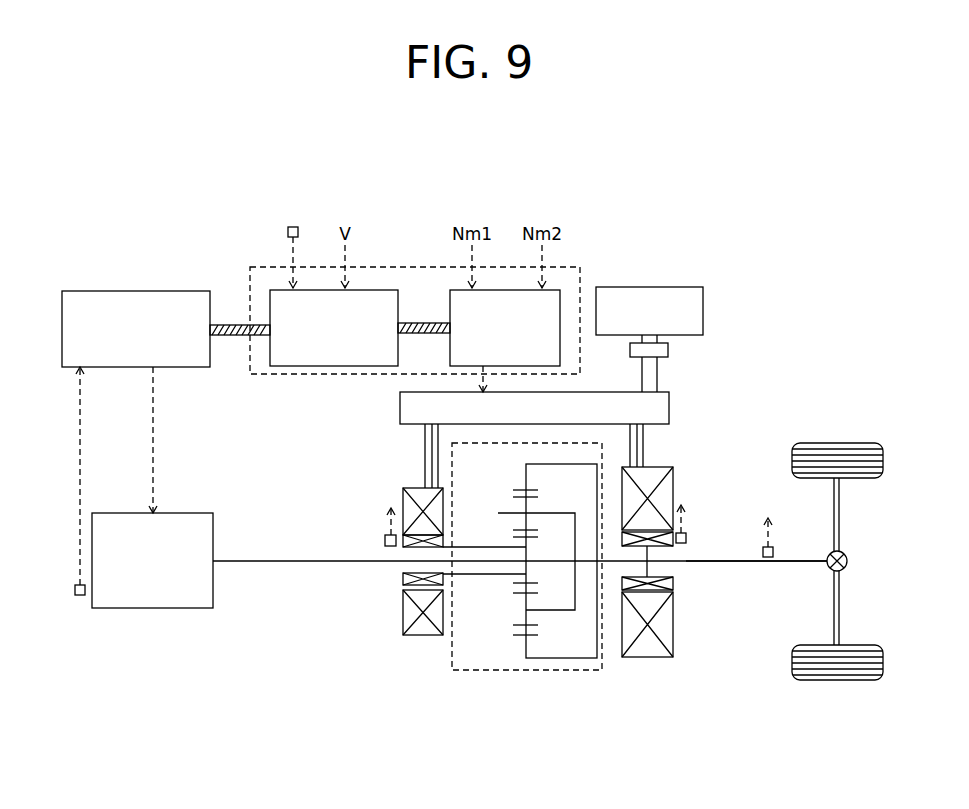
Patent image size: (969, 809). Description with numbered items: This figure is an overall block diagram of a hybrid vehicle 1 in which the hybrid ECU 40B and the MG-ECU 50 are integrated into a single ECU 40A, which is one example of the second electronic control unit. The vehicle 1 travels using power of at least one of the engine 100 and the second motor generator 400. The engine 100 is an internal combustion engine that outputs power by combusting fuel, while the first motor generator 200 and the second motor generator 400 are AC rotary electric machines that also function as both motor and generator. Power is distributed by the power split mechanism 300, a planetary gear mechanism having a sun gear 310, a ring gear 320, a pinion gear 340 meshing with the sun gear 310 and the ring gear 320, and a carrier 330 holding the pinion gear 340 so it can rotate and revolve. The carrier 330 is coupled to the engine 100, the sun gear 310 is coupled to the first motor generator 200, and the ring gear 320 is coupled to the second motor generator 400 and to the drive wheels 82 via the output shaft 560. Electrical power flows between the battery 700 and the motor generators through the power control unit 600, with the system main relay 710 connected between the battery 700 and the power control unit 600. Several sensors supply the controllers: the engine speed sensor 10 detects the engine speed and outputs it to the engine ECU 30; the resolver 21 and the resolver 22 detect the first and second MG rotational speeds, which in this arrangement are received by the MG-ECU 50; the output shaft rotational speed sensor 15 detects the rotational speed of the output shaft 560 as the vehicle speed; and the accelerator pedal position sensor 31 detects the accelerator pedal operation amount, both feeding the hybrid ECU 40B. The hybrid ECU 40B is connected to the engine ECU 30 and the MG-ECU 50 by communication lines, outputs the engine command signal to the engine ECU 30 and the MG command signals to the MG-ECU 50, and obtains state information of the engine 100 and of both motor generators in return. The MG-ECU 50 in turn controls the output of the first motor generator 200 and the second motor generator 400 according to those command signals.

The vehicle 1 is at (518, 184).
The engine speed sensor 10 is at (79, 598).
The output shaft rotational speed sensor 15 is at (775, 553).
The resolver 21 is at (384, 541).
The resolver 22 is at (688, 538).
The engine ECU 30 is at (175, 291).
The accelerator pedal position sensor 31 is at (294, 226).
The ECU 40A is at (578, 268).
The hybrid ECU 40B is at (371, 292).
The MG-ECU 50 is at (560, 360).
The drive wheels 82 is at (856, 443).
The engine 100 is at (158, 608).
The first motor generator 200 is at (424, 636).
The power split mechanism 300 is at (524, 670).
The sun gear 310 is at (513, 537).
The ring gear 320 is at (516, 486).
The carrier 330 is at (572, 513).
The pinion gear 340 is at (513, 497).
The second motor generator 400 is at (647, 657).
The output shaft 560 is at (791, 563).
The power control unit 600 is at (670, 406).
The battery 700 is at (704, 310).
The system main relay 710 is at (669, 350).